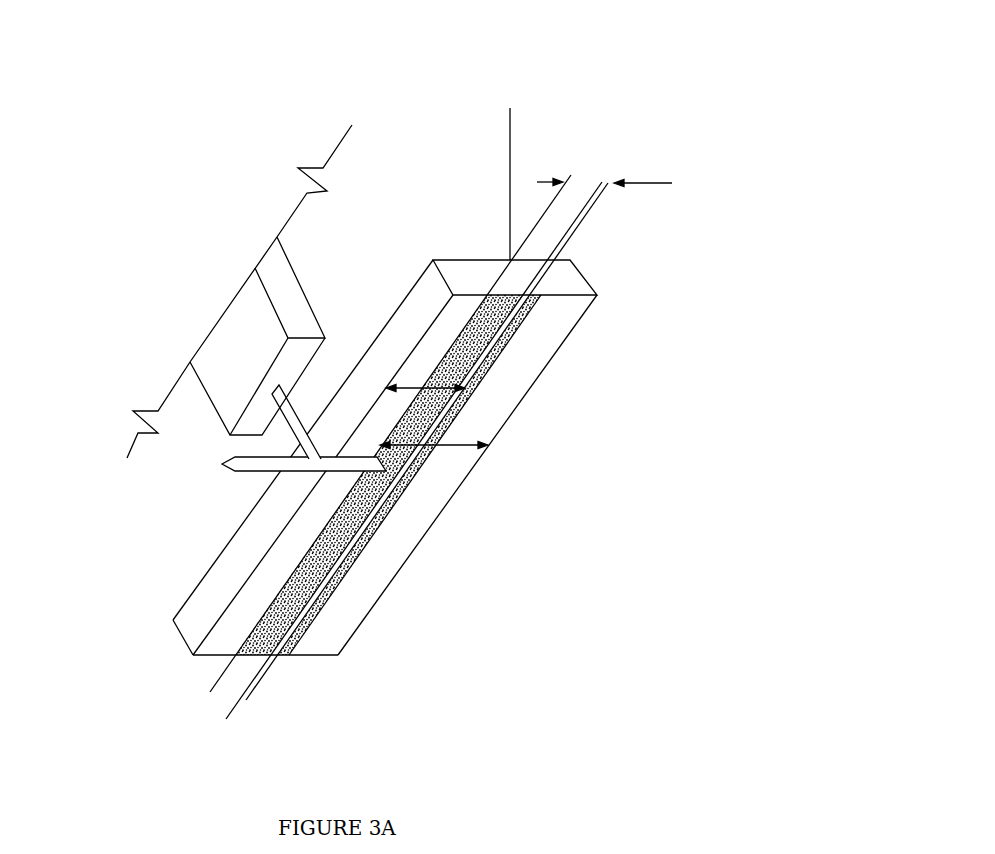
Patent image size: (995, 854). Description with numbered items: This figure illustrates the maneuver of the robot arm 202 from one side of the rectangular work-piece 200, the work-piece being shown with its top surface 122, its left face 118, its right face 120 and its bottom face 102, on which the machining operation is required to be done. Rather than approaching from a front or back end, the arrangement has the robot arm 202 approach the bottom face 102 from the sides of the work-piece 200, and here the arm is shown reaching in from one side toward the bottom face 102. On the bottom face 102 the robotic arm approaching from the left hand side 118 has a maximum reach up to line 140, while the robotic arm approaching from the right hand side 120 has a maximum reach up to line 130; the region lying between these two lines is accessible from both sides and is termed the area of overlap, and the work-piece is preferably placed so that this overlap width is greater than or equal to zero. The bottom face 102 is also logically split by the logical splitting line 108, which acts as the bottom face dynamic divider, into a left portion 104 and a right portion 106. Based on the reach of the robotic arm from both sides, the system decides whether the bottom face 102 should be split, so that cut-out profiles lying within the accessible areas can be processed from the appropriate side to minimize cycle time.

The rectangular work-piece 200 is at (427, 373).
The robot arm 202 is at (187, 421).
The bottom face 102 is at (497, 383).
The left portion 104 is at (310, 501).
The right portion 106 is at (436, 457).
The logical splitting line 108 is at (592, 205).
The left face 118 is at (258, 532).
The right face 120 is at (587, 278).
The top surface 122 is at (510, 108).
The line of maximum reach from the right hand side 130 is at (328, 538).
The line of maximum reach from the left hand side 140 is at (322, 576).